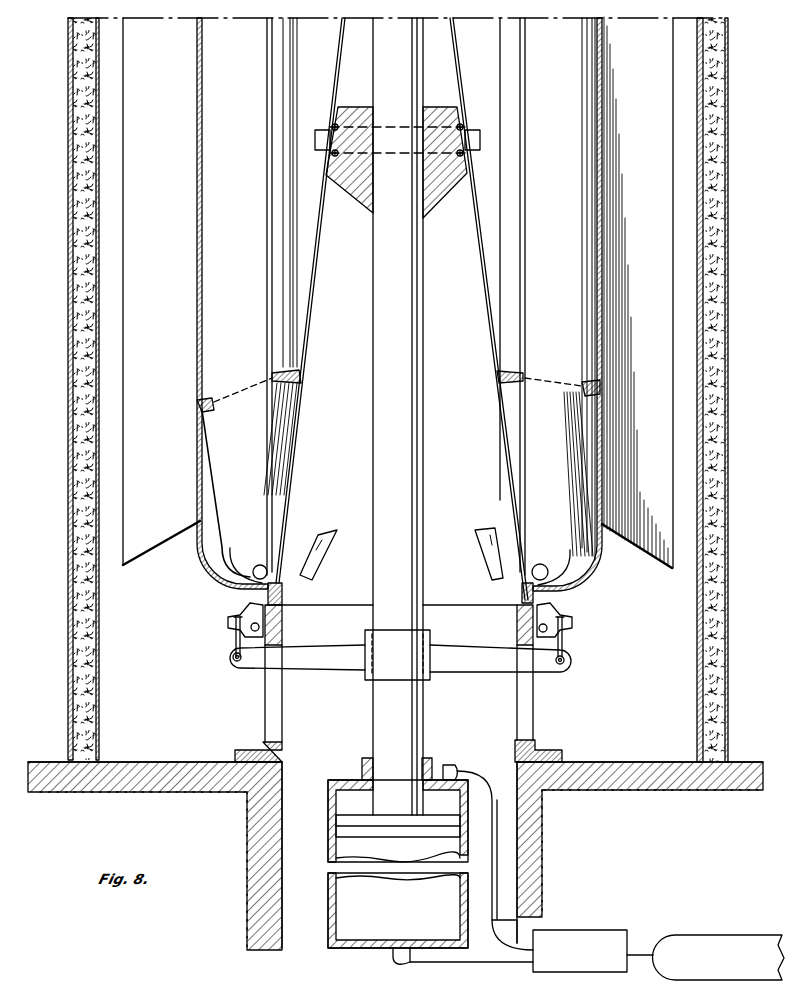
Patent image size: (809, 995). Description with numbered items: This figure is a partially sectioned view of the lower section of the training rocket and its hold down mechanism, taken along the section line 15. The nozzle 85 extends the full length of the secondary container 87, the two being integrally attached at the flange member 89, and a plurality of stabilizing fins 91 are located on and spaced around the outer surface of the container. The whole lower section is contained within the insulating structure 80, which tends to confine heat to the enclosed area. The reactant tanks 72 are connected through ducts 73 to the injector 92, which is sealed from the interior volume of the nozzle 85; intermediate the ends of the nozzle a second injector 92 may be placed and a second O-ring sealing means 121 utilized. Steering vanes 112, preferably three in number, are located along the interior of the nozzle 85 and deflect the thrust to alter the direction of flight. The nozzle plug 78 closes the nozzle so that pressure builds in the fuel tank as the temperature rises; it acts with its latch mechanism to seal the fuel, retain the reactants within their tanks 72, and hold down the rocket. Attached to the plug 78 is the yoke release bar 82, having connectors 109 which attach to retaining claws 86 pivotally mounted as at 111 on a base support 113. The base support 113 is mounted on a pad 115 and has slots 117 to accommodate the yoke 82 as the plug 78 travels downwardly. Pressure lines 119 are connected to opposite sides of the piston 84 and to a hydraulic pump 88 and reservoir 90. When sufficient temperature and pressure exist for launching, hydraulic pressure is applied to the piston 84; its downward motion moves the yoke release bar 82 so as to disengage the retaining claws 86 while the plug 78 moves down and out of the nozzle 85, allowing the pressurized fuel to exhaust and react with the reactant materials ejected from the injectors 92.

The section line 15- 15 is at (149, 274).
The tanks 72 is at (228, 560).
The ducts 73 is at (313, 136).
The nozzle plug 78 is at (423, 524).
The insulation 80 is at (77, 708).
The yoke release bar 82 is at (570, 660).
The piston 84 is at (345, 820).
The nozzle 85 is at (297, 445).
The retaining claws 86 is at (233, 612).
The secondary container 87 is at (596, 553).
The hydraulic pump 88 is at (595, 933).
The flange member 89 is at (277, 600).
The reservoir 90 is at (710, 935).
The stabilizing fins 91 is at (130, 568).
The injector 92 is at (318, 130).
The connectors 109 is at (567, 634).
The pivot 111 is at (540, 637).
The steering vanes 112 is at (327, 532).
The base support 113 is at (515, 622).
The pad 115 is at (600, 750).
The slots 117 is at (528, 733).
The pressure lines 119 is at (518, 917).
The second O-ring sealing means 121 is at (437, 193).